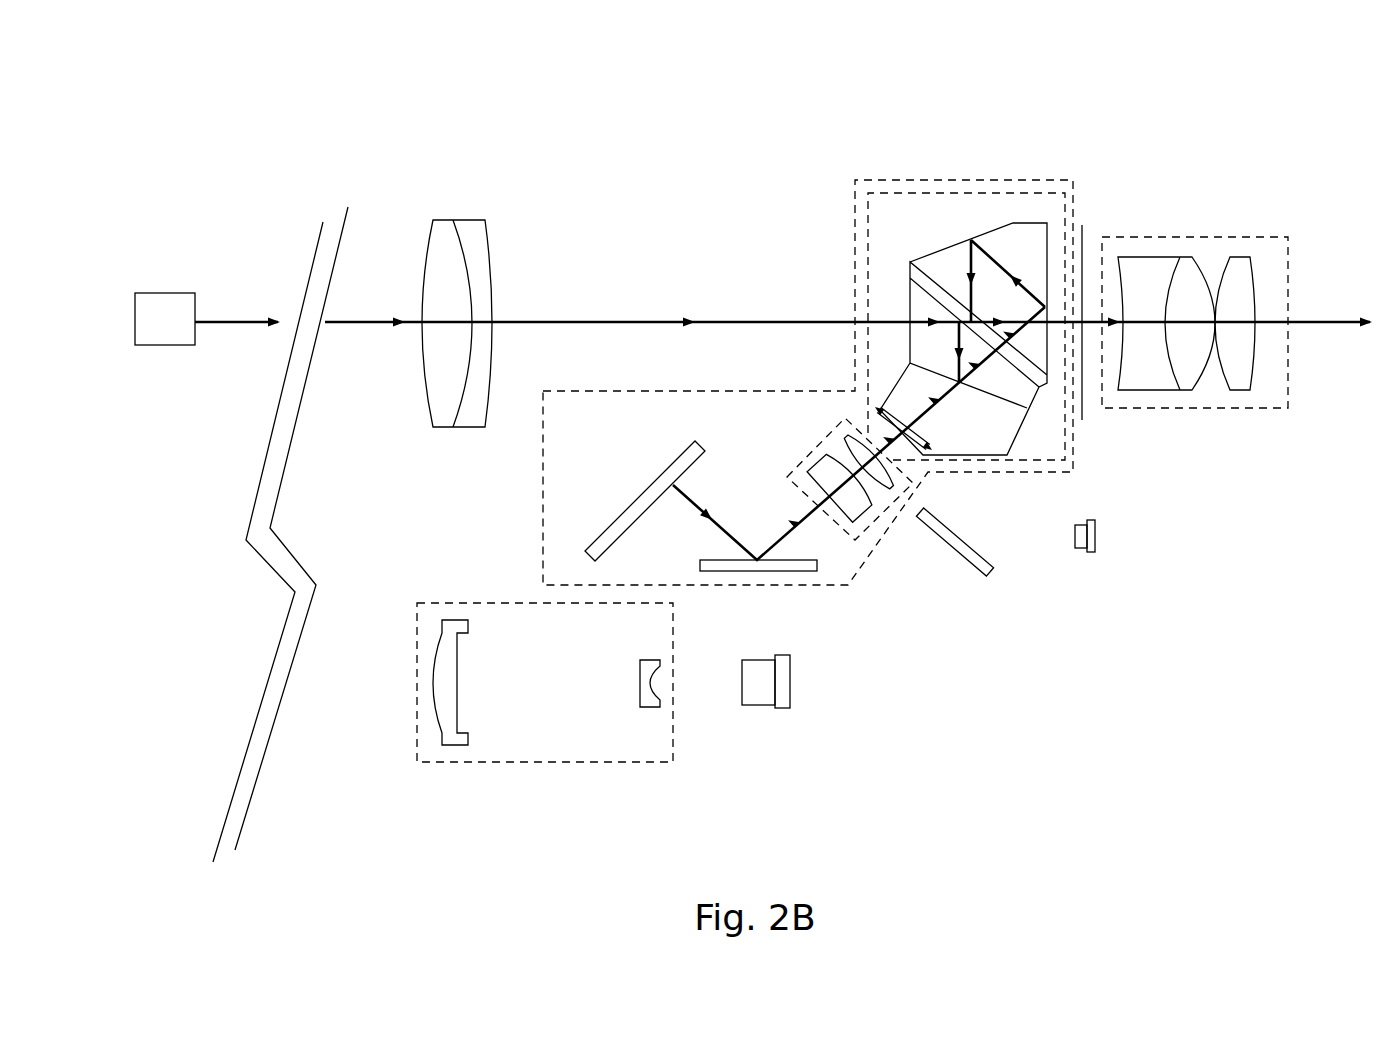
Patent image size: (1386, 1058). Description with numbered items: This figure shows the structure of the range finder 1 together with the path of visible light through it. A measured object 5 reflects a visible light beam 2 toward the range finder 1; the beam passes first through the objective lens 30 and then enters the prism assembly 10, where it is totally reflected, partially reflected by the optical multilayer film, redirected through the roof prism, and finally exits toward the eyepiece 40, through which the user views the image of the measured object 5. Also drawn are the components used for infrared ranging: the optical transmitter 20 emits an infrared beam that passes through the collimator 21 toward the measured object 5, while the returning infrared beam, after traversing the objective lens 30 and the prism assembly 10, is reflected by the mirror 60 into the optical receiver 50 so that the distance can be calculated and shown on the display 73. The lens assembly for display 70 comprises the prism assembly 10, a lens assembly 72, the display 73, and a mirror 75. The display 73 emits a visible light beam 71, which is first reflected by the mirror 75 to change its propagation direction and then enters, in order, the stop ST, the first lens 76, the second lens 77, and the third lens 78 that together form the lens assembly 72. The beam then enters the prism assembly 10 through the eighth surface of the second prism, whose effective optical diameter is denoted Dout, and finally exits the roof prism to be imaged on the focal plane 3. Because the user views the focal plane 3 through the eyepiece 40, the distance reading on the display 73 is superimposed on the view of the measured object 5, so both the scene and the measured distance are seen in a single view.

The range finder 1 is at (305, 110).
The visible light beam 2 is at (215, 325).
The focal plane 3 is at (1082, 225).
The measured object 5 is at (160, 293).
The prism assembly 10 is at (975, 180).
The optical transmitter 20 is at (777, 708).
The collimator 21 is at (545, 762).
The objective lens 30 is at (455, 222).
The eyepiece 40 is at (1193, 237).
The optical receiver 50 is at (1084, 553).
The mirror 60 is at (962, 558).
The lens assembly for display 70 is at (543, 470).
The visible light beam 71 is at (693, 497).
The lens assembly 72 is at (800, 485).
The display 73 is at (622, 507).
The mirror 75 is at (757, 573).
The first lens 76 is at (866, 532).
The second lens 77 is at (815, 448).
The third lens 78 is at (845, 430).
The stop ST is at (847, 520).
The effective optical diameter of the eighth surface Dout is at (920, 430).